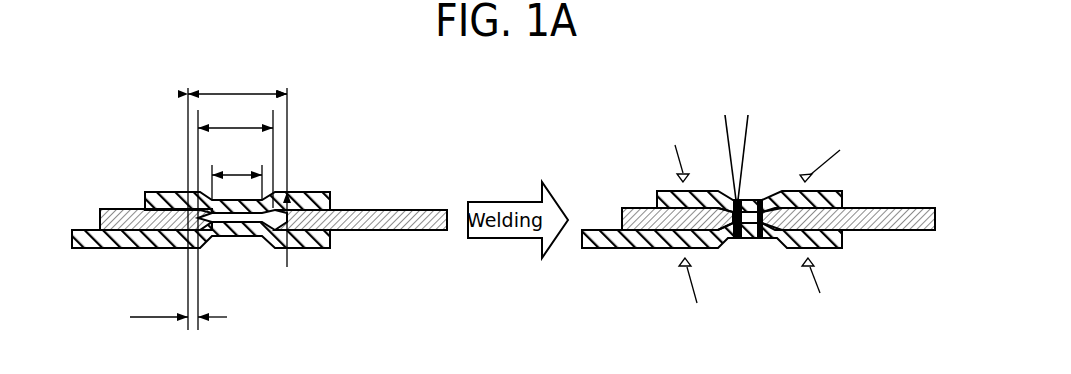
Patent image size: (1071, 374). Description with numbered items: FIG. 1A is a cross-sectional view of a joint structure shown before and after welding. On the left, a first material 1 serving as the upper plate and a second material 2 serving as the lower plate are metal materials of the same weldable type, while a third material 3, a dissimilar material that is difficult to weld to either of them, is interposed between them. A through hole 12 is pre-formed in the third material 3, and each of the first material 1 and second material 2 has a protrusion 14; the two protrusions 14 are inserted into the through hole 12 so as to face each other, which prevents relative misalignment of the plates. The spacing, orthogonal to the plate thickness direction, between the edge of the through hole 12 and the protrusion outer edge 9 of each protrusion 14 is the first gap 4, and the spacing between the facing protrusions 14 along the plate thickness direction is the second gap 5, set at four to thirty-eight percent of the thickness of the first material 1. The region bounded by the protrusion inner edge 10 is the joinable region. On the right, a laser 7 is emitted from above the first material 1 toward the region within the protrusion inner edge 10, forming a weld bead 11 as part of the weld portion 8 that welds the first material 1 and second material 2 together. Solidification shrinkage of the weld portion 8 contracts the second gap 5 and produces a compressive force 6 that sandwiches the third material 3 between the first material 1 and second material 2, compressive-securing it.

The first material 1 is at (313, 192).
The second material 2 is at (118, 248).
The third material 3 is at (100, 208).
The first gap 4 is at (178, 304).
The second gap 5 is at (292, 237).
The compressive force 6 is at (764, 221).
The laser 7 is at (747, 123).
The weld portion 8 is at (748, 200).
The protrusion outer edge 9 is at (235, 214).
The protrusion inner edge 10 is at (237, 169).
The weld bead 11 is at (758, 238).
The through hole 12 is at (237, 196).
The protrusion 14 is at (235, 220).